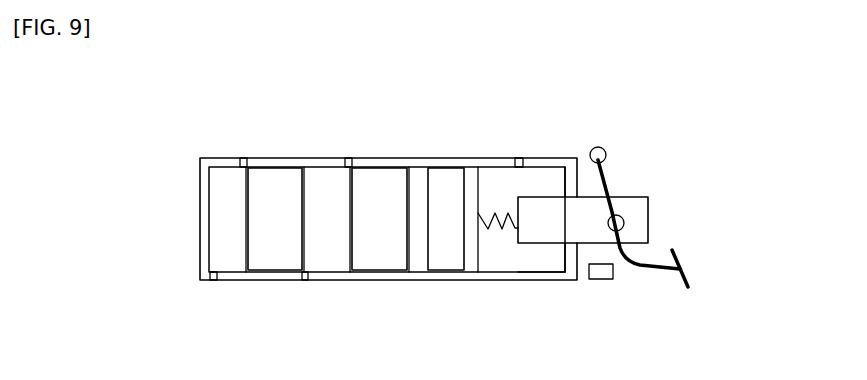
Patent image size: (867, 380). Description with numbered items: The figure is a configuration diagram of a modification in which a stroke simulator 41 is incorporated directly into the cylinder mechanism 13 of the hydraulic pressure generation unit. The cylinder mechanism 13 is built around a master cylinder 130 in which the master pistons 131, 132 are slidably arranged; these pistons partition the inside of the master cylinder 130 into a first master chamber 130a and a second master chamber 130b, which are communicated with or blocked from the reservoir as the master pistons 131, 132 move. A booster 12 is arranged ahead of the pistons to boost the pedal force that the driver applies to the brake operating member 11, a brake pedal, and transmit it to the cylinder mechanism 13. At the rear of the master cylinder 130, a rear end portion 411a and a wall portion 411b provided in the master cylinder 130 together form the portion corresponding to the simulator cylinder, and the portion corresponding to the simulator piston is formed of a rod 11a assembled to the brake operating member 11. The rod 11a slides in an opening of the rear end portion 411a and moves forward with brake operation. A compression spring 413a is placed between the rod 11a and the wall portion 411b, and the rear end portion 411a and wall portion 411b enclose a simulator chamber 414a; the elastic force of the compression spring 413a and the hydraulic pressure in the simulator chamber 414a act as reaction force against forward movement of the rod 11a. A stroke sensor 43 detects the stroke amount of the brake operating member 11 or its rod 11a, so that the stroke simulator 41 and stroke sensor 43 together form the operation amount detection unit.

The cylinder mechanism 13 is at (165, 214).
The master cylinder 130 is at (199, 181).
The first master chamber 130a is at (323, 258).
The second master chamber 130b is at (227, 258).
The master piston 132 is at (273, 178).
The master piston 131 is at (383, 180).
The booster 12 is at (445, 182).
The rear end portion 411a is at (505, 162).
The wall portion 411b is at (467, 228).
The compression spring 413a is at (503, 232).
The stroke simulator 41 is at (507, 277).
The simulator chamber 414a is at (532, 265).
The rod 11a is at (555, 212).
The stroke sensor 43 is at (598, 280).
The brake operating member 11 is at (679, 262).